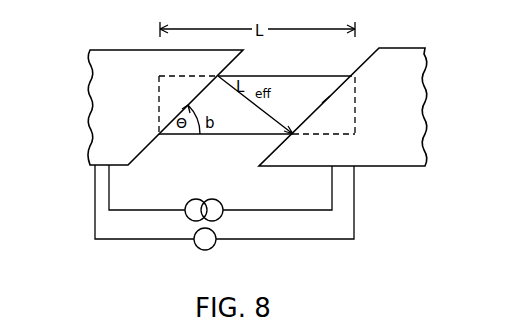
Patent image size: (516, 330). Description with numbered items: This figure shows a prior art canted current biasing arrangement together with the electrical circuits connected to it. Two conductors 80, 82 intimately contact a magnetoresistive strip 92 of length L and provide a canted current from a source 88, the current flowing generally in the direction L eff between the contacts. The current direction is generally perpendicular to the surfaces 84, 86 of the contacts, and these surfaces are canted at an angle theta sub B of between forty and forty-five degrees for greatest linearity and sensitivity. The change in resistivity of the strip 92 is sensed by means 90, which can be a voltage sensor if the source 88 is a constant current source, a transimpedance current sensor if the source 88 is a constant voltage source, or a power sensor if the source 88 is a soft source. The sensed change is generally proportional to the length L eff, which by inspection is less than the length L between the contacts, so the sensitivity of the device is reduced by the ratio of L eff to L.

The conductor 80 is at (103, 95).
The conductor 82 is at (418, 95).
The canted surface of contact 84 is at (193, 99).
The canted surface of contact 86 is at (320, 106).
The source 88 is at (138, 242).
The sensing means 90 is at (138, 210).
The magnetoresistive strip 92 is at (272, 76).